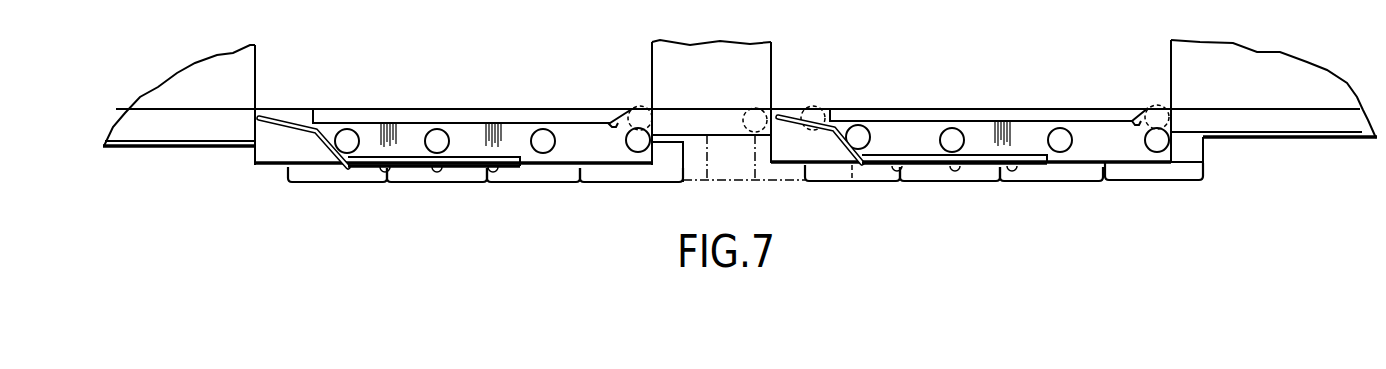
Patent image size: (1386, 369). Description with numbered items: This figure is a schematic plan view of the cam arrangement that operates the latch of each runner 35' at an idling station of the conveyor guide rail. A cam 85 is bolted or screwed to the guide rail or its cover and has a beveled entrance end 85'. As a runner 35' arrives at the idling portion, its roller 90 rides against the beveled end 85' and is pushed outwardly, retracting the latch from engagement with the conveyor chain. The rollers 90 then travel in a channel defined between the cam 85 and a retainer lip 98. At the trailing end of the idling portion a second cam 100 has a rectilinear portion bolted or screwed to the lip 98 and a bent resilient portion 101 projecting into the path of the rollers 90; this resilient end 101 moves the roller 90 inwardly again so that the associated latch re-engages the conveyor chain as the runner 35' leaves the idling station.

The runner 35' is at (745, 198).
The cam 85 is at (730, 107).
The beveled entrance end 85' is at (873, 87).
The roller 90 is at (437, 137).
The retainer lip 98 is at (580, 160).
The second cam 100 is at (405, 172).
The bent resilient portion 101 is at (333, 147).